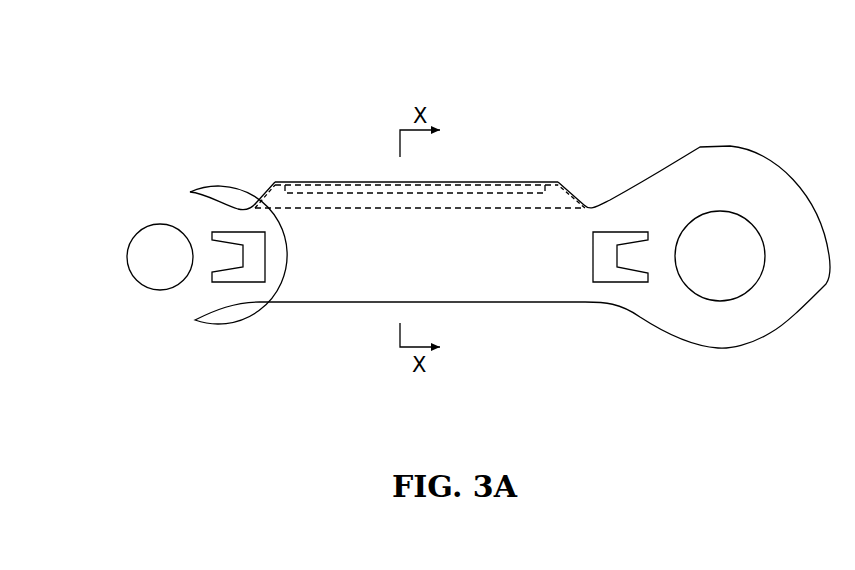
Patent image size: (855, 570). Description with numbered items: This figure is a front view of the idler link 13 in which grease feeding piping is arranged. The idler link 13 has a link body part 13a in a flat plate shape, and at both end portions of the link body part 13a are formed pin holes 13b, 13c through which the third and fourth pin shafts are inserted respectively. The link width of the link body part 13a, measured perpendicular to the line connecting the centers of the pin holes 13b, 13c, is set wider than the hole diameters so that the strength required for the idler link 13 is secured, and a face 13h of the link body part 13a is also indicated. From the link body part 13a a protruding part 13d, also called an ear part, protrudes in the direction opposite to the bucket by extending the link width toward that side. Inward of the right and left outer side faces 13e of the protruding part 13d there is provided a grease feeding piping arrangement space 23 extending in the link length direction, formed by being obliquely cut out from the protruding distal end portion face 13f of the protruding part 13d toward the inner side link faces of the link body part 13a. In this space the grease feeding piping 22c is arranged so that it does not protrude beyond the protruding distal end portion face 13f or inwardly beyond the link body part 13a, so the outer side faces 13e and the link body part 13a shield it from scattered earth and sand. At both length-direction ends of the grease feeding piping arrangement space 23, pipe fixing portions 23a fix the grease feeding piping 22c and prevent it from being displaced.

The idler link 13 is at (542, 103).
The link body part 13a is at (518, 262).
The pin hole 13b is at (720, 281).
The pin hole 13c is at (160, 272).
The protruding part 13d is at (323, 180).
The outer side face 13e is at (444, 203).
The protruding distal end portion face 13f is at (518, 182).
The bottom surface 13h is at (340, 303).
The grease feeding piping 22c is at (482, 188).
The grease feeding piping arrangement space 23 is at (372, 180).
The pipe fixing portion 23a is at (268, 195).